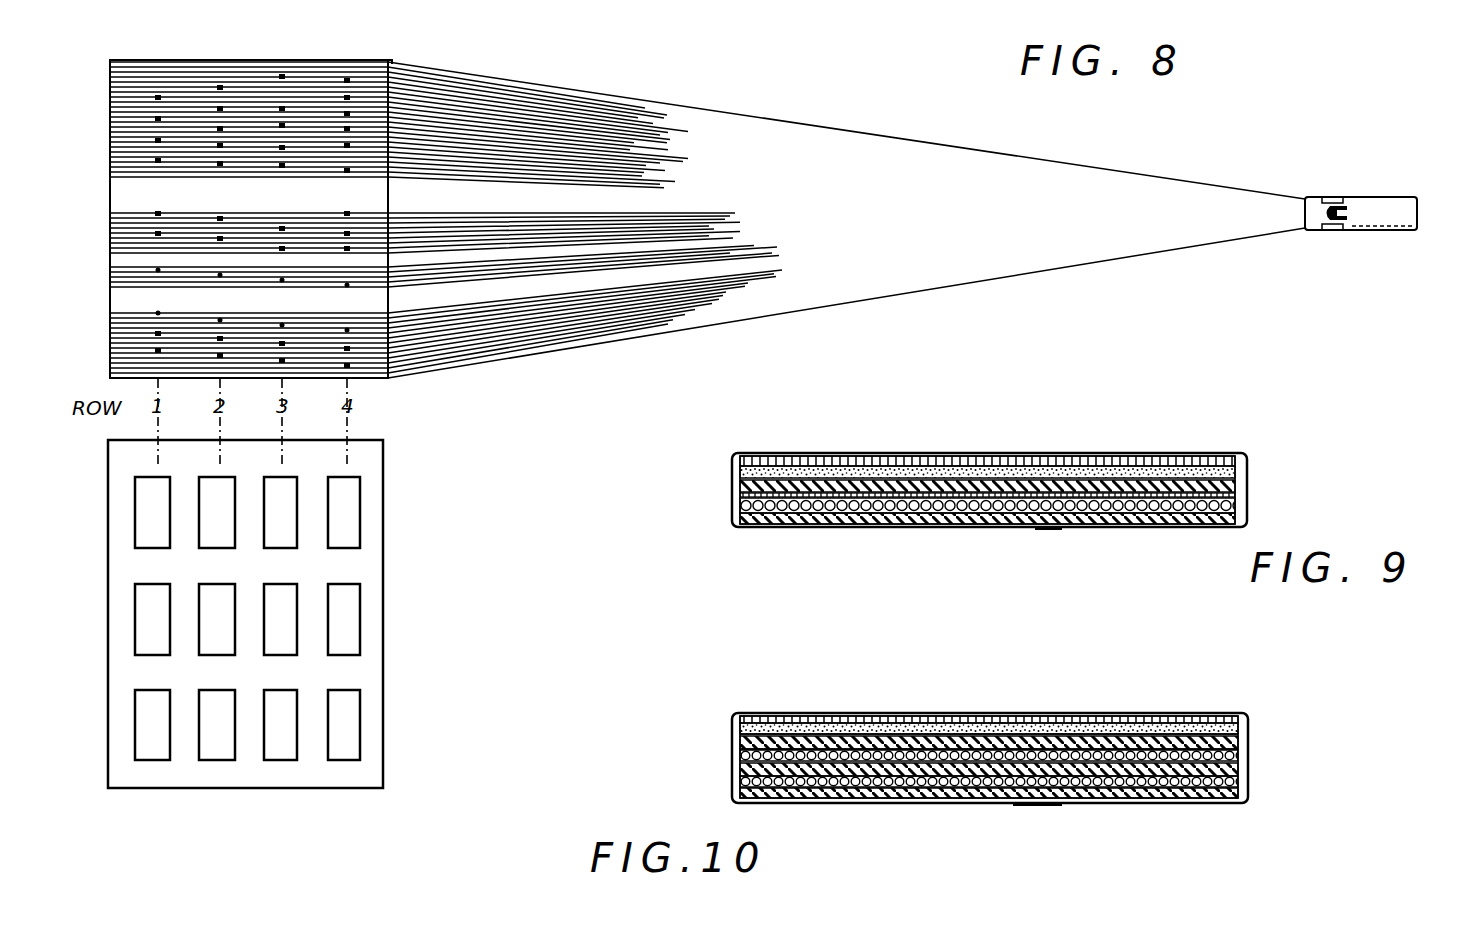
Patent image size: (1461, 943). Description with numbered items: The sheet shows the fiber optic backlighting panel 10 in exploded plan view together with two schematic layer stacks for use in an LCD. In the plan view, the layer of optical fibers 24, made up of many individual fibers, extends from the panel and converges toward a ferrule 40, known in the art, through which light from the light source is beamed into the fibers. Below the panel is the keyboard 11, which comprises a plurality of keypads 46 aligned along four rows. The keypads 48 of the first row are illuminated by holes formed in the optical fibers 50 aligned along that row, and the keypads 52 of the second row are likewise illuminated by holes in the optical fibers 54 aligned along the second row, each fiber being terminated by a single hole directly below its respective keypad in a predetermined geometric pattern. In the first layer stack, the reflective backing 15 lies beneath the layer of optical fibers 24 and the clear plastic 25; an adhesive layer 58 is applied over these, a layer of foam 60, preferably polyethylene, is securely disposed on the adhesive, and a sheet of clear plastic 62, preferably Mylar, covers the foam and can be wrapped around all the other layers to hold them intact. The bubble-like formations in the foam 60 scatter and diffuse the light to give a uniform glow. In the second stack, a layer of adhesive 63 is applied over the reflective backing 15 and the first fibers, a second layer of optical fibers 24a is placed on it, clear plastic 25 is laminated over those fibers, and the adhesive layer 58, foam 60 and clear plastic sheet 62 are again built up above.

In FIG. 8, the backlighting panel 10 is at (438, 371).
In FIG. 8, the keyboard 11 is at (385, 536).
In FIG. 8, the reflective backing 15 is at (108, 183).
In FIG. 9, the reflective backing 15 is at (1168, 508).
In FIG. 10, the reflective backing 15 is at (1207, 788).
In FIG. 9, the layer of optical fibers 24 is at (1233, 503).
In FIG. 10, the layer of optical fibers 24 is at (1238, 780).
In FIG. 10, the second layer of optical fibers 24a is at (1238, 752).
In FIG. 9, the clear plastic 25 is at (1237, 487).
In FIG. 10, the clear plastic 25 is at (1043, 736).
In FIG. 8, the ferrule 40 is at (1356, 224).
In FIG. 8, the keypads 46 is at (348, 625).
In FIG. 8, the keypads aligned along ROW 1 48 is at (137, 503).
In FIG. 8, the optical fibers aligned along ROW 1 50 is at (150, 98).
In FIG. 8, the keypads aligned along ROW 2 52 is at (204, 548).
In FIG. 8, the optical fibers aligned along ROW 2 54 is at (223, 70).
In FIG. 9, the adhesive layer 58 is at (1237, 479).
In FIG. 10, the adhesive layer 58 is at (1212, 735).
In FIG. 9, the layer of foam 60 is at (857, 472).
In FIG. 10, the layer of foam 60 is at (880, 728).
In FIG. 9, the sheet of clear plastic 62 is at (990, 456).
In FIG. 10, the sheet of clear plastic 62 is at (803, 714).
In FIG. 10, the layer of adhesive 63 is at (1232, 765).